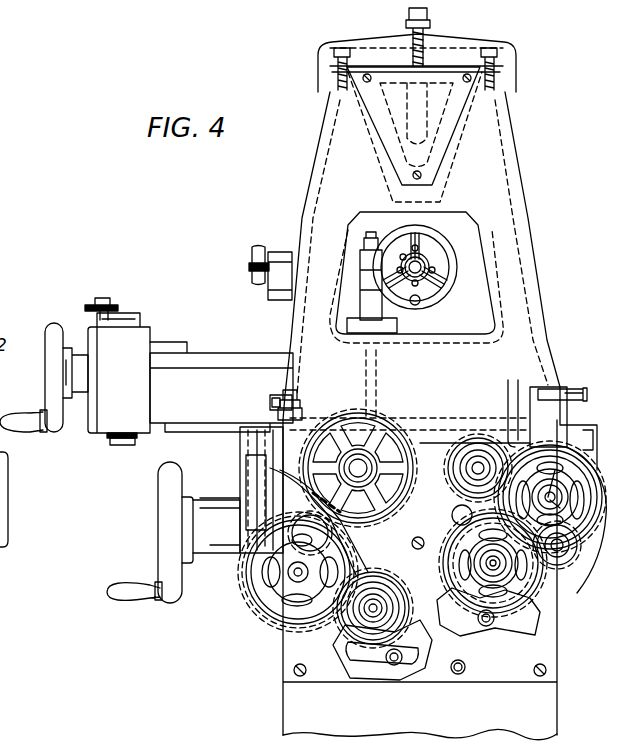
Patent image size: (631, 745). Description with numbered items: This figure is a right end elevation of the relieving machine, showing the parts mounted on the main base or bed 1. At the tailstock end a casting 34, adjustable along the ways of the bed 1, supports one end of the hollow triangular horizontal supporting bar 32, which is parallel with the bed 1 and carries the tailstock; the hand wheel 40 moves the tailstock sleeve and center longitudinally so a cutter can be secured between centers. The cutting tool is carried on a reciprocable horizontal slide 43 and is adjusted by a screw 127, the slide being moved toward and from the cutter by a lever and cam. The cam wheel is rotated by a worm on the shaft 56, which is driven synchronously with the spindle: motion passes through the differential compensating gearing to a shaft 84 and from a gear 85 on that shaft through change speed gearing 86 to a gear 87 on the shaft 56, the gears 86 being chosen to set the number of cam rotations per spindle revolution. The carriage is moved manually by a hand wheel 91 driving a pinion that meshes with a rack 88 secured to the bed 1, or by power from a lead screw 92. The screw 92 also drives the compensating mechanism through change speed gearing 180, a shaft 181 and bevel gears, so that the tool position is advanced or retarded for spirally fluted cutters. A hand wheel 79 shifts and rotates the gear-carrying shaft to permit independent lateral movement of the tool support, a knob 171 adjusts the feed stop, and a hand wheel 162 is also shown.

The main base or bed 1 is at (290, 702).
The horizontal supporting bar 32 is at (377, 104).
The casting 34 is at (500, 162).
The hand wheel 40 is at (433, 296).
The reciprocable horizontal slide 43 is at (218, 353).
The shaft 56 is at (478, 462).
The hand wheel 79 is at (3, 518).
The shaft 84 is at (523, 597).
The gear 85 is at (562, 566).
The change speed gearing 86 is at (560, 522).
The gear 87 is at (505, 450).
The rack 88 is at (248, 492).
The hand wheel 91 is at (165, 540).
The screw 92 is at (362, 463).
The screw 127 is at (256, 258).
The hand wheel 162 is at (62, 315).
The knob 171 is at (117, 304).
The change speed gearing 180 is at (258, 548).
The shaft 181 is at (378, 604).